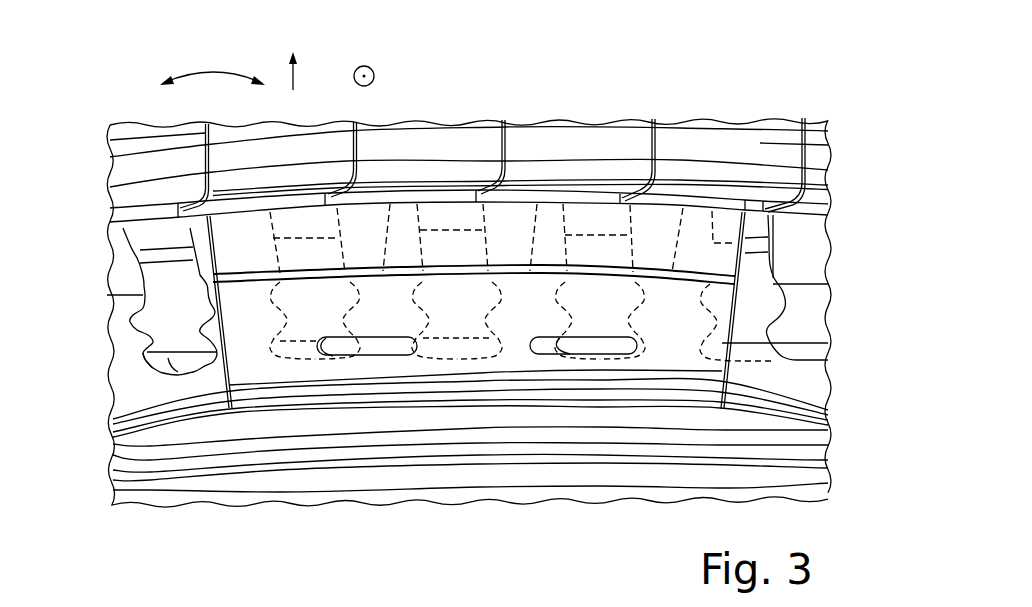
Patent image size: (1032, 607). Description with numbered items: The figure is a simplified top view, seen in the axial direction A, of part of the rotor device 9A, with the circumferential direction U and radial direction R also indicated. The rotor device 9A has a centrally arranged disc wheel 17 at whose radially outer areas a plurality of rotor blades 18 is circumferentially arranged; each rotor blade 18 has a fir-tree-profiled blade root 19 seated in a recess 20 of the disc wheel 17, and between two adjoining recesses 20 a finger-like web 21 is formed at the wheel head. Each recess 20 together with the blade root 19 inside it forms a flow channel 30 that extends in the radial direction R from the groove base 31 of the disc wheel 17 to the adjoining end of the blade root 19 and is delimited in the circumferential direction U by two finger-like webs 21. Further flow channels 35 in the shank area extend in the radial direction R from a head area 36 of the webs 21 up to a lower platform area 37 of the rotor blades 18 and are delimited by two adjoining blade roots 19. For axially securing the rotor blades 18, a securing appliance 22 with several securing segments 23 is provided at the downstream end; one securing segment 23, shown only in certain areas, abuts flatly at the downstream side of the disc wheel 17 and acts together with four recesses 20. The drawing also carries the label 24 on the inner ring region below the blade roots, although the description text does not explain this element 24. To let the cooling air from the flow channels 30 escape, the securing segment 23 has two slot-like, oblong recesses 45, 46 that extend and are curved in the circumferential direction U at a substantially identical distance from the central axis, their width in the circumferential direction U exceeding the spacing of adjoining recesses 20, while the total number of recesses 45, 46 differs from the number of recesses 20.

The rotor device 9A is at (105, 98).
The disc wheel 17 is at (107, 457).
The rotor blade 18 is at (123, 177).
The blade root 19 is at (117, 348).
The recess 20 is at (118, 376).
The finger-like web 21 is at (143, 355).
The securing appliance 22 is at (680, 198).
The securing segment 23 is at (523, 210).
The inner ring 24 is at (118, 413).
The flow channel 30 is at (173, 374).
The groove base 31 is at (215, 372).
The further flow channel 35 is at (115, 231).
The head area 36 is at (127, 303).
The lower platform area 37 is at (823, 217).
The recess 45 is at (405, 356).
The recess 46 is at (537, 355).
The circumferential direction U is at (213, 72).
The radial direction R is at (296, 82).
The axial direction A is at (372, 68).